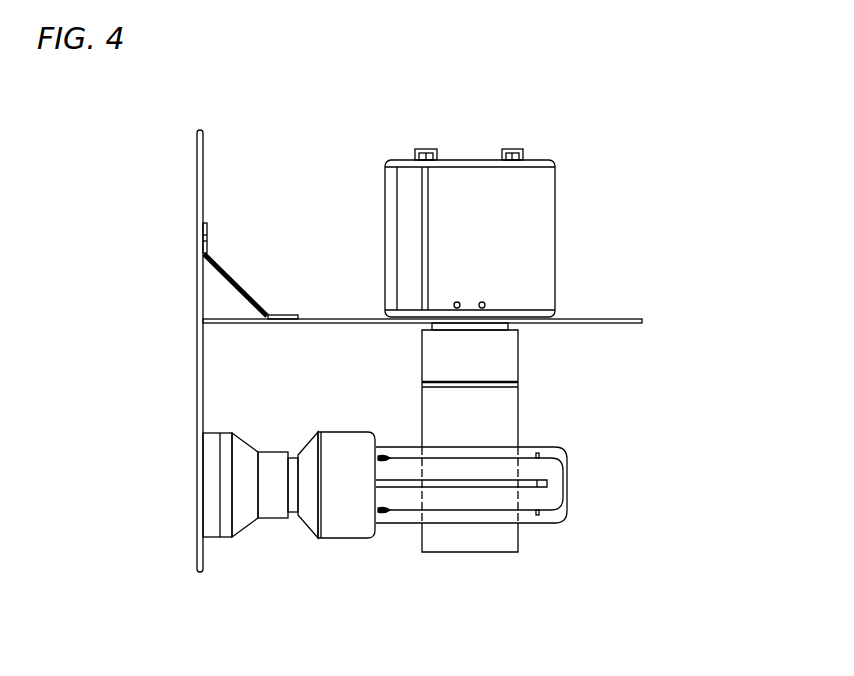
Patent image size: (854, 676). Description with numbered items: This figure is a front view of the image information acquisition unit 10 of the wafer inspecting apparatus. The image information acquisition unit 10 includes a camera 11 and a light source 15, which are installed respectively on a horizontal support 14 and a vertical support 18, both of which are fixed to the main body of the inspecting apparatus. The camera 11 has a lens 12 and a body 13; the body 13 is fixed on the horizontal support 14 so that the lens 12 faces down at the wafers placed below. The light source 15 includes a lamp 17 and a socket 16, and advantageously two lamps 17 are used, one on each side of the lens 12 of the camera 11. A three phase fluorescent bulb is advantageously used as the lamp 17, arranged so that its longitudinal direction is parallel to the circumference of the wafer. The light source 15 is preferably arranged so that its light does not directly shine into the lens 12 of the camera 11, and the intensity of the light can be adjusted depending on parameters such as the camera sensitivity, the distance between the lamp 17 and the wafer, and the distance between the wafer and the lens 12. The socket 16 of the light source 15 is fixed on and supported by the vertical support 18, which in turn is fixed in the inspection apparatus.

The image information acquisition unit 10 is at (674, 127).
The camera 11 is at (705, 195).
The lens 12 is at (493, 418).
The body 13 is at (455, 180).
The horizontal support 14 is at (590, 318).
The light source 15 is at (411, 557).
The socket 16 is at (353, 563).
The lamp 17 is at (530, 525).
The vertical support 18 is at (197, 167).